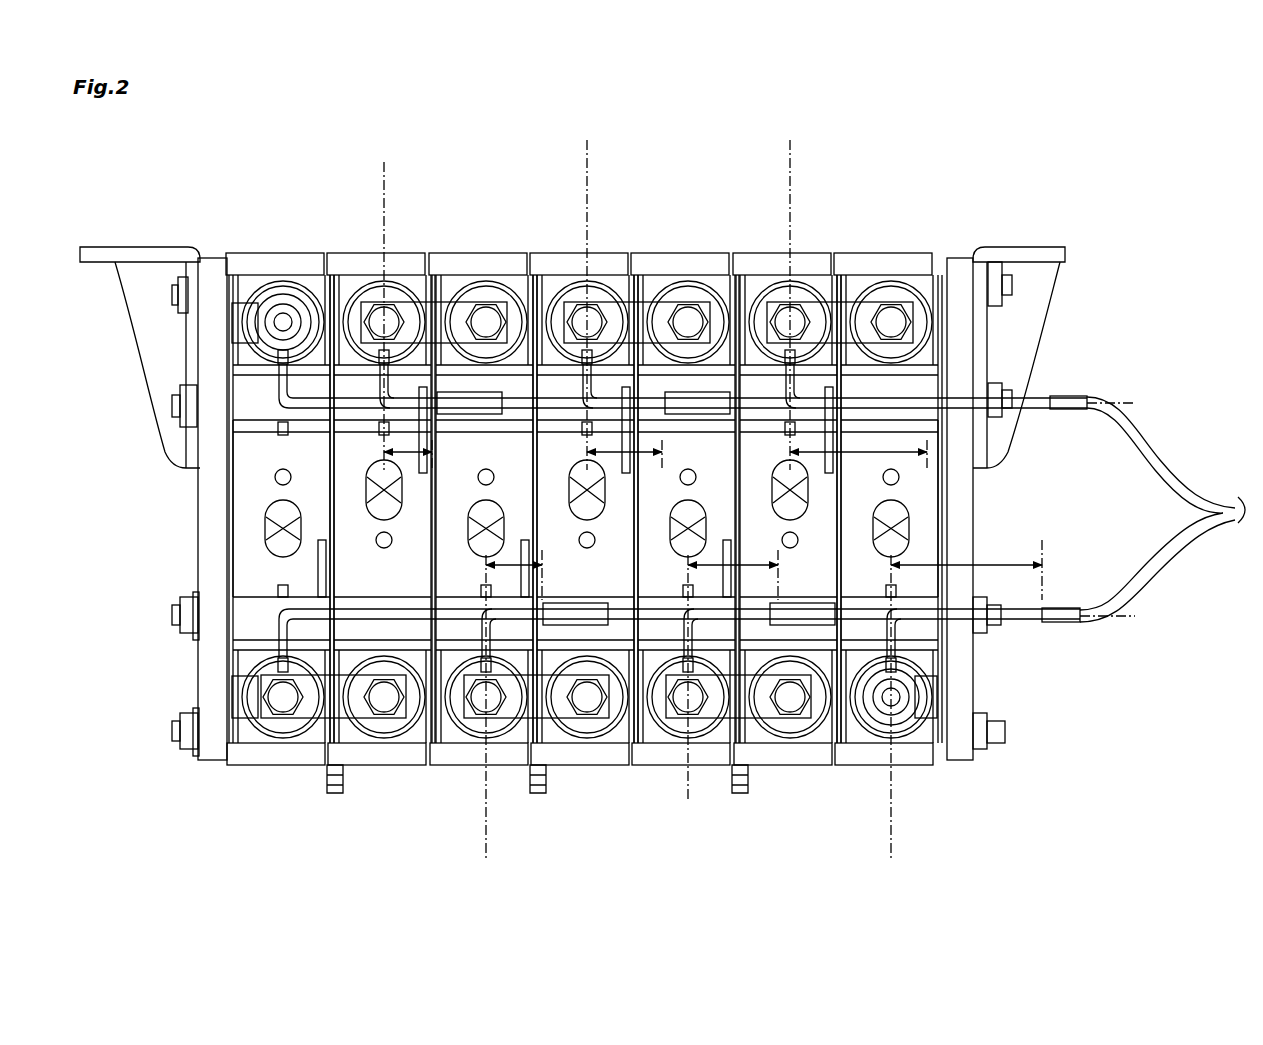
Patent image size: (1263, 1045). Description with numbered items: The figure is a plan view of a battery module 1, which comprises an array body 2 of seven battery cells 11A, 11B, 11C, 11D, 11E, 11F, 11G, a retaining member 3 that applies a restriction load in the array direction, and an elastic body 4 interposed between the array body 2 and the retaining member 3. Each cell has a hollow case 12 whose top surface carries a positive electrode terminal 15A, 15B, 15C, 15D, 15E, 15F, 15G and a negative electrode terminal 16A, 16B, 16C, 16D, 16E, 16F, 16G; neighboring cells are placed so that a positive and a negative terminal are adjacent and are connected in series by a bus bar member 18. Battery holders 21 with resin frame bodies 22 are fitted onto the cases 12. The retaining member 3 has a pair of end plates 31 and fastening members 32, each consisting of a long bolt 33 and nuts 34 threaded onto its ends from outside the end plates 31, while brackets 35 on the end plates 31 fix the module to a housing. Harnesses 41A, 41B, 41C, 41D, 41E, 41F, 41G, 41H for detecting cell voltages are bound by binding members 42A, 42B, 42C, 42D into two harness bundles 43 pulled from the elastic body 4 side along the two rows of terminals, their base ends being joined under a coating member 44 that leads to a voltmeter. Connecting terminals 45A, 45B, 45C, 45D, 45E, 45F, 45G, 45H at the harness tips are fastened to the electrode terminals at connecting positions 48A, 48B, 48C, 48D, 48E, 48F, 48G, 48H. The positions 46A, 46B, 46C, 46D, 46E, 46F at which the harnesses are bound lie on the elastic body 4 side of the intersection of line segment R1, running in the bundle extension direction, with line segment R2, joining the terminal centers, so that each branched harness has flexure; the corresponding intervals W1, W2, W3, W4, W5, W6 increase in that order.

The battery module 1 is at (216, 162).
The array body 2 is at (195, 190).
The retaining member 3 is at (170, 227).
The elastic body 4 is at (950, 300).
The battery cell 11A is at (241, 773).
The battery cell 11B is at (386, 775).
The battery cell 11C is at (444, 775).
The battery cell 11D is at (584, 775).
The battery cell 11E is at (636, 775).
The battery cell 11F is at (805, 775).
The battery cell 11G is at (933, 780).
The case 12 is at (250, 490).
The positive electrode terminal 15A is at (283, 281).
The positive electrode terminal 15B is at (373, 740).
The positive electrode terminal 15C is at (488, 281).
The positive electrode terminal 15D is at (600, 740).
The positive electrode terminal 15E is at (690, 281).
The positive electrode terminal 15F is at (862, 740).
The positive electrode terminal 15G is at (893, 281).
The negative electrode terminal 16A is at (308, 738).
The negative electrode terminal 16B is at (392, 285).
The negative electrode terminal 16C is at (497, 740).
The negative electrode terminal 16D is at (594, 285).
The negative electrode terminal 16E is at (730, 740).
The negative electrode terminal 16F is at (797, 285).
The negative electrode terminal 16G is at (900, 740).
The bus bar member 18 is at (465, 300).
The battery holder 21 is at (298, 195).
The frame body 22 is at (258, 767).
The end plate 31 is at (200, 527).
The fastening member 32 is at (145, 290).
The bolt 33 is at (178, 300).
The nut 34 is at (1012, 280).
The bracket 35 is at (100, 250).
The harness 41A is at (287, 370).
The harness 41B is at (392, 370).
The harness 41C is at (595, 370).
The harness 41D is at (797, 370).
The harness 41E is at (280, 600).
The harness 41F is at (483, 615).
The harness 41G is at (684, 660).
The voltage detection wire 41H is at (893, 640).
The binding member 42A is at (493, 408).
The binding member 42B is at (707, 405).
The binding member 42C is at (600, 610).
The binding member 42D is at (818, 605).
The harness bundle 43 is at (637, 420).
The coating member 44 is at (1147, 455).
The connecting terminal 45A is at (282, 352).
The connecting terminal 45B is at (384, 352).
The connecting terminal 45C is at (586, 352).
The connecting terminal 45D is at (788, 352).
The connecting terminal 45E is at (277, 723).
The connecting terminal 45F is at (477, 712).
The connecting terminal 45G is at (700, 730).
The terminal connection portion 45H is at (905, 680).
The position 46A is at (437, 410).
The position 46B is at (690, 390).
The position 46C is at (560, 625).
The position 46D is at (800, 628).
The position 46E is at (925, 403).
The position 46F is at (1045, 605).
The connecting position 48A is at (236, 330).
The connecting position 48B is at (370, 300).
The bus bar 48C is at (560, 305).
The bus bar 48D is at (765, 305).
The bus bar 48E is at (290, 660).
The bus bar 48F is at (300, 697).
The bus bar 48G is at (768, 715).
The bus bar 48H is at (895, 668).
The line segment R1 is at (1110, 400).
The line segment R2 is at (634, 497).
The interval W1 is at (384, 452).
The interval W2 is at (523, 555).
The interval W3 is at (634, 472).
The interval W4 is at (733, 568).
The interval W5 is at (858, 459).
The interval W6 is at (966, 570).